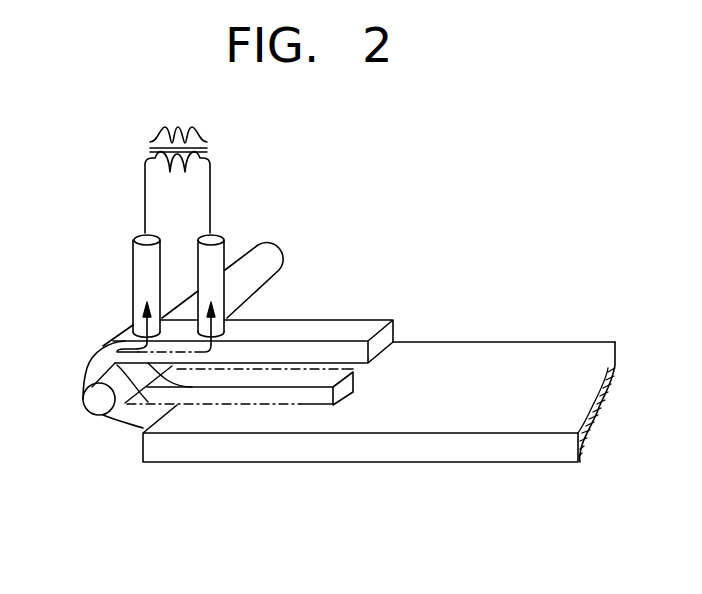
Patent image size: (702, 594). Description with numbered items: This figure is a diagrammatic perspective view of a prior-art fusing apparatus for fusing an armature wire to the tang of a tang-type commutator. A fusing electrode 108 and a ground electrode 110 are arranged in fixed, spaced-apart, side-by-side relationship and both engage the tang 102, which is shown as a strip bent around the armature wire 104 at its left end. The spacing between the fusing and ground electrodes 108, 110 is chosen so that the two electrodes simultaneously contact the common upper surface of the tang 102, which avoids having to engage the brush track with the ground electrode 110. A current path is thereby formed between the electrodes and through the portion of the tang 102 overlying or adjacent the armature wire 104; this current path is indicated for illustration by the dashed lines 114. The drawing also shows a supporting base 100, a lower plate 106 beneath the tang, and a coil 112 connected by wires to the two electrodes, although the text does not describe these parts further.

The substrate 100 is at (453, 448).
The tang 102 is at (87, 365).
The armature wire 104 is at (95, 405).
The plate 106 is at (345, 395).
The fusing electrode 108 is at (143, 282).
The ground electrode 110 is at (207, 263).
The coil 112 is at (207, 149).
The dashed lines 114 is at (112, 336).